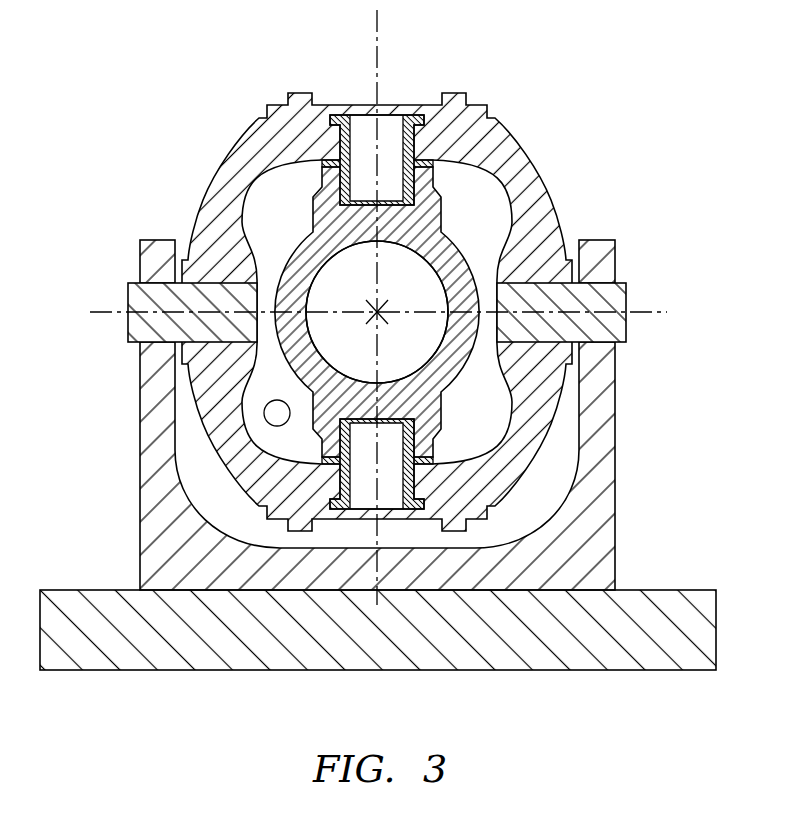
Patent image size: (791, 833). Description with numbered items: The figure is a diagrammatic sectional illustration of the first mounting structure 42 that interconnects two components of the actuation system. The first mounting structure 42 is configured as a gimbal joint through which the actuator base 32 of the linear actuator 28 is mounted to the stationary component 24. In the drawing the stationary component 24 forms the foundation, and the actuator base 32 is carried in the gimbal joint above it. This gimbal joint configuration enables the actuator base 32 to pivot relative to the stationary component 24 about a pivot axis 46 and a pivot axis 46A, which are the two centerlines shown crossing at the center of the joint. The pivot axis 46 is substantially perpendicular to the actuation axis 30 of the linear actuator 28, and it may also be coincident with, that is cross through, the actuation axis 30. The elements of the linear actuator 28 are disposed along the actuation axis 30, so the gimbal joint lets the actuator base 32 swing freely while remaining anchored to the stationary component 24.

The stationary component 24 is at (667, 588).
The actuator base 32 is at (547, 382).
The first mounting structure 42 is at (537, 153).
The linear actuator 28 is at (477, 241).
The actuation axis 30 is at (381, 322).
The pivot axis 46 is at (380, 38).
The pivot axis 46A is at (651, 302).